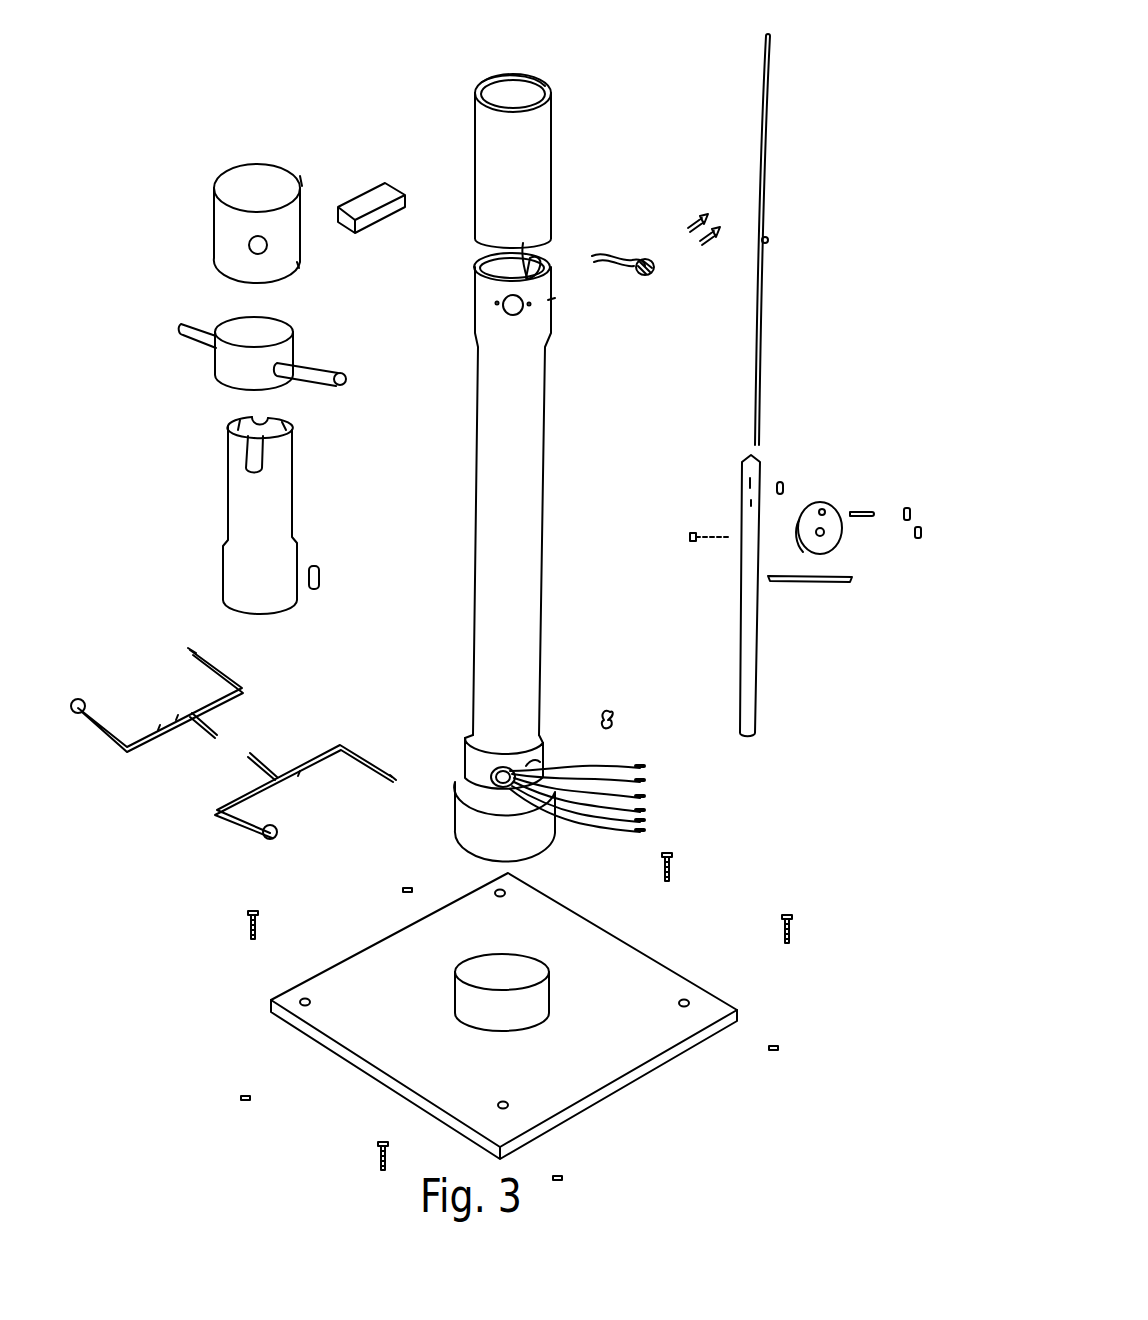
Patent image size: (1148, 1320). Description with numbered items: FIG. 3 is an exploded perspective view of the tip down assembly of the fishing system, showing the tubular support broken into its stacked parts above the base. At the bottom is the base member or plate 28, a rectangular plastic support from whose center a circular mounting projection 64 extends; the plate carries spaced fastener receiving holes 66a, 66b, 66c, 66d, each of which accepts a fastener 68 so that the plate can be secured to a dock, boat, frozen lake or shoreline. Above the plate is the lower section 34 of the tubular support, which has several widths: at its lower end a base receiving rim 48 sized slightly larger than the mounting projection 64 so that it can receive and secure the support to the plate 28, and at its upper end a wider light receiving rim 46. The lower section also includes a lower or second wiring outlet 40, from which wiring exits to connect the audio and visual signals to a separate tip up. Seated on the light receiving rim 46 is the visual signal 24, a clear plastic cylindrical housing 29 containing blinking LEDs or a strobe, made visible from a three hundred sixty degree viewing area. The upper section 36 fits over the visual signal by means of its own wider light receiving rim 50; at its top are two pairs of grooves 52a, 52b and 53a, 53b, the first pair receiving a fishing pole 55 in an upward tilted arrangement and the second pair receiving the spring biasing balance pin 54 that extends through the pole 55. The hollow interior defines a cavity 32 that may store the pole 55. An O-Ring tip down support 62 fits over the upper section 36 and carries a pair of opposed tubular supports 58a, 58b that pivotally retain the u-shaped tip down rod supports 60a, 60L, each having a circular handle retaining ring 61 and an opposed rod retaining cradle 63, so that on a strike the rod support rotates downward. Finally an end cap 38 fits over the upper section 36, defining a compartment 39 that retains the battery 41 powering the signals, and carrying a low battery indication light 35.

The visual signal 24 is at (553, 160).
The base member or plate 28 is at (550, 978).
The clear plastic cylindrical housing 29 is at (553, 93).
The cavity 32 is at (541, 258).
The lower section 34 is at (542, 528).
The low battery indication light 35 is at (249, 246).
The upper section 36 is at (298, 527).
The end cap 38 is at (301, 184).
The cavity or compartment 39 is at (297, 263).
The lower or second wiring outlet 40 is at (532, 762).
The battery 41 is at (380, 194).
The light receiving rim 46 is at (555, 300).
The base receiving rim 48 is at (482, 836).
The light receiving rim 50 is at (283, 587).
The groove 52a is at (264, 420).
The groove 52b is at (265, 464).
The groove 53a is at (239, 422).
The groove 53b is at (288, 428).
The spring biasing balance pin 54 is at (813, 582).
The fishing pole 55 is at (764, 456).
The tubular support 58a is at (341, 368).
The tubular support 58b is at (184, 327).
The left bracket 60L is at (212, 678).
The tip down rod support 60a is at (339, 747).
The circular handle retaining ring 61 is at (80, 702).
The O-Ring tip down support 62 is at (291, 333).
The rod retaining cradle 63 is at (191, 648).
The circular mounting projection 64 is at (617, 992).
The fastener receiving hole 66a is at (689, 1002).
The fastener receiving hole 66b is at (508, 1106).
The fastener receiving hole 66c is at (300, 1003).
The fastener receiving hole 66d is at (505, 893).
The fastener 68 is at (259, 917).